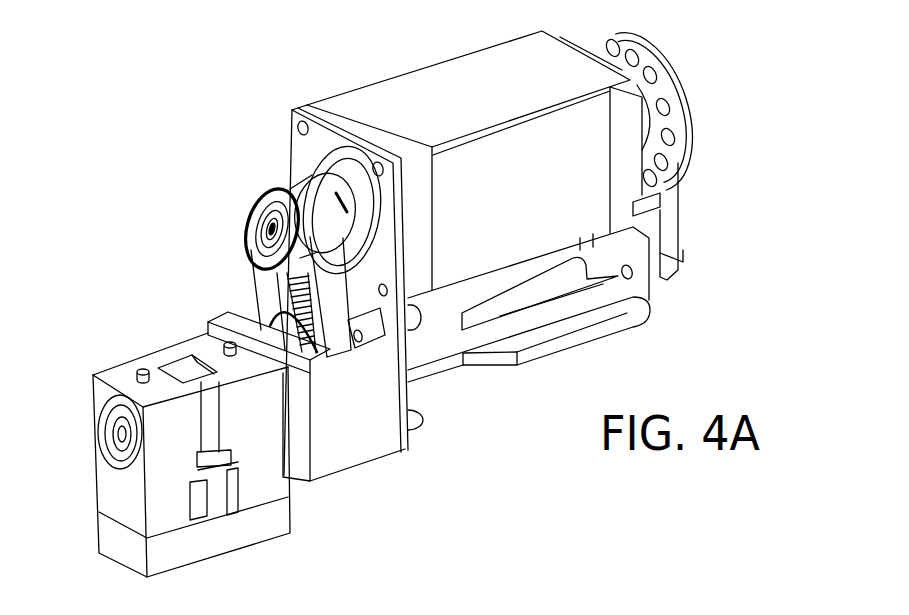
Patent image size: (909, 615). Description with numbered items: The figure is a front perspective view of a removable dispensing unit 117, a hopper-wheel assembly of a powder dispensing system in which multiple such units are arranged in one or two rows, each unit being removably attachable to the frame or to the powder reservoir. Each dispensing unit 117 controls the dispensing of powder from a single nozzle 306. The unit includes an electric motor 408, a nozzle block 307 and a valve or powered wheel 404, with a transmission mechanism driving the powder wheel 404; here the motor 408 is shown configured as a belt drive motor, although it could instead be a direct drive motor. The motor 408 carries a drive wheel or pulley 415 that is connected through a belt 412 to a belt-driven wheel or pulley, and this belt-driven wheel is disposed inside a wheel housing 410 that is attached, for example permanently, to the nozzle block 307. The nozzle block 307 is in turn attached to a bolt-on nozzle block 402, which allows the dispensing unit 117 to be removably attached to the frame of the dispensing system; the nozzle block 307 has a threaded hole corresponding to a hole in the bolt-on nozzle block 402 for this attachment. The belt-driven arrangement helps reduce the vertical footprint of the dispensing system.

The dispensing unit 117 is at (782, 70).
The electric motor 408 is at (333, 103).
The belt 412 is at (295, 200).
The drive wheel or pulley 415 is at (256, 255).
The wheel housing 410 is at (387, 390).
The nozzle 306 is at (175, 372).
The nozzle block 307 is at (257, 468).
The powder wheel 404 is at (97, 443).
The bolt-on nozzle block 402 is at (110, 537).